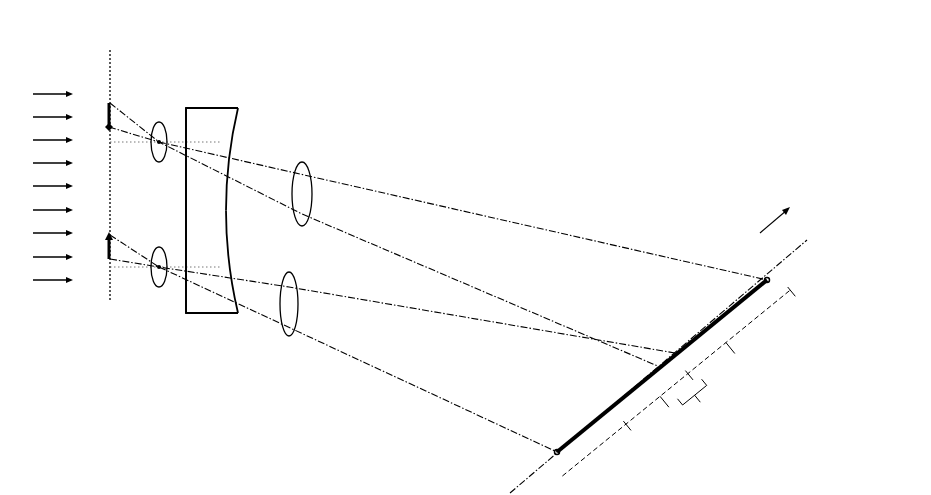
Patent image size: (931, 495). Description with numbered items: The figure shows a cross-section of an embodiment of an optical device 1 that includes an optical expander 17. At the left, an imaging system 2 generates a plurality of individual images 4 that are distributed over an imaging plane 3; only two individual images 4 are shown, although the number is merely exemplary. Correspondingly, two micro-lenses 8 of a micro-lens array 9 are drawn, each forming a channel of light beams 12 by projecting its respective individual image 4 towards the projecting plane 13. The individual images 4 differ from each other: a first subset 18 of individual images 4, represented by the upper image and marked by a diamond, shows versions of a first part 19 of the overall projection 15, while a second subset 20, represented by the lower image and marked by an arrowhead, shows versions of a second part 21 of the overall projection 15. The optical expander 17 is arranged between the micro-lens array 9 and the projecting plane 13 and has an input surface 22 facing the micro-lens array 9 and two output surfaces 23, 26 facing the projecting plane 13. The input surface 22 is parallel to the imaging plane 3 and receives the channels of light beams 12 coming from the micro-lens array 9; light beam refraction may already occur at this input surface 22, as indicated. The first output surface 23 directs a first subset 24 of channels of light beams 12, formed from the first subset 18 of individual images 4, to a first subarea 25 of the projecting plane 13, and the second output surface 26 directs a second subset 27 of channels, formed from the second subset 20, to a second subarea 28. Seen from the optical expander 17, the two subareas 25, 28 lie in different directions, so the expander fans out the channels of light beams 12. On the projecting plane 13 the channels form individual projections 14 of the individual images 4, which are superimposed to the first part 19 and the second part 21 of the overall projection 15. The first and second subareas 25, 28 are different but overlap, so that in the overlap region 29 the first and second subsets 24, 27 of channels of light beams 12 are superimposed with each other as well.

The optical device 1 is at (484, 75).
The imaging system 2 is at (28, 328).
The imaging plane 3 is at (111, 50).
The individual images 4 is at (142, 160).
The micro-lenses 8 is at (163, 121).
The micro-lens array 9 is at (137, 328).
The channels of light beams 12 is at (307, 253).
The projecting plane 13 is at (520, 485).
The individual projections 14 is at (735, 259).
The overall projection 15 is at (760, 277).
The optical expander 17 is at (208, 193).
The first subset of individual images 18 is at (113, 107).
The first part of the overall projection 19 is at (660, 366).
The second subset of individual images 20 is at (116, 234).
The second part of the overall projection 21 is at (598, 416).
The input surface 22 is at (184, 194).
The first output surface 23 is at (238, 128).
The first subset of channels of light beams 24 is at (305, 162).
The first subarea 25 is at (760, 331).
The second output surface 26 is at (236, 260).
The second subset of channels of light beams 27 is at (288, 338).
The second subarea 28 is at (658, 413).
The overlap region 29 is at (699, 401).